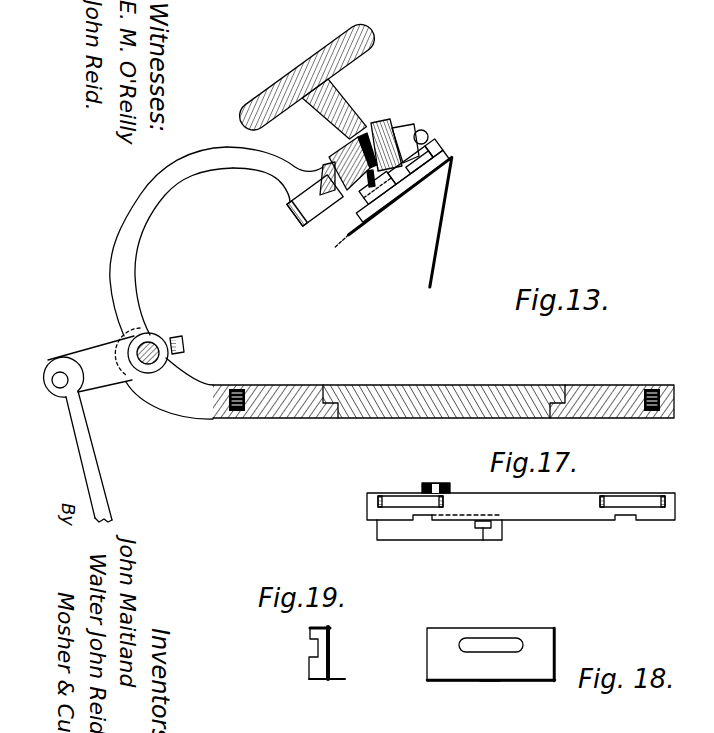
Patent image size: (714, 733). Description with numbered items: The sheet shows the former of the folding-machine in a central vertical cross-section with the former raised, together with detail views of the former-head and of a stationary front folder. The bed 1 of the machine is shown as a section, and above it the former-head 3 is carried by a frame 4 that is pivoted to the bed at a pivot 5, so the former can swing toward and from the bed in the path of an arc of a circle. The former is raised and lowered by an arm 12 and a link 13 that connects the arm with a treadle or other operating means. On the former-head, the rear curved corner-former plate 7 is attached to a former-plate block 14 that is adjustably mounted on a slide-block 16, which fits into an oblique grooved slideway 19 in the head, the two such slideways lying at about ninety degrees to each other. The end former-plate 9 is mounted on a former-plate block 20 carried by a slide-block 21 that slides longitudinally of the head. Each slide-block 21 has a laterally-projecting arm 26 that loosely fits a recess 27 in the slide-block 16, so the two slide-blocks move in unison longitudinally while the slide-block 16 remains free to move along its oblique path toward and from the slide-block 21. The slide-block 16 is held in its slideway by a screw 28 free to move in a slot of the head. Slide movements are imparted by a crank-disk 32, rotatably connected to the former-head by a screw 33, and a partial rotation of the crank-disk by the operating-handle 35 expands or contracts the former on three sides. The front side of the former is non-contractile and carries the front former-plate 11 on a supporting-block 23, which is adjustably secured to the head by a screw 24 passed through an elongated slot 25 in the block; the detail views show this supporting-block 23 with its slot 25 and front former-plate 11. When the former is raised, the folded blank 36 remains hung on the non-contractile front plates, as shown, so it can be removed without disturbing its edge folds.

In FIG. 13, the bed 1 is at (493, 385).
In FIG. 13, the former-head 3 is at (382, 128).
In FIG. 17, the former-head 3 is at (556, 521).
In FIG. 13, the frame 4 is at (172, 185).
In FIG. 13, the pivot 5 is at (143, 365).
In FIG. 13, the curved corner-former plate 7 is at (357, 232).
In FIG. 13, the end former-plate 9 is at (405, 200).
In FIG. 13, the front former-plate 11 is at (432, 168).
In FIG. 19, the front former-plate 11 is at (332, 682).
In FIG. 18, the front former-plate 11 is at (490, 682).
In FIG. 13, the arm 12 is at (89, 353).
In FIG. 13, the link 13 is at (99, 467).
In FIG. 13, the former-plate block 14 is at (381, 210).
In FIG. 13, the slide-block 16 is at (366, 194).
In FIG. 17, the slide-block 16 is at (430, 535).
In FIG. 17, the grooved slideway 19 is at (418, 514).
In FIG. 13, the former-plate block 20 is at (413, 186).
In FIG. 13, the slide-block 21 is at (405, 170).
In FIG. 13, the supporting-block 23 is at (403, 126).
In FIG. 19, the supporting-block 23 is at (333, 641).
In FIG. 18, the supporting-block 23 is at (548, 641).
In FIG. 13, the screw 24 is at (425, 131).
In FIG. 18, the elongated slot 25 is at (474, 643).
In FIG. 13, the laterally-projecting arm 26 is at (363, 196).
In FIG. 17, the laterally-projecting arm 26 is at (482, 521).
In FIG. 17, the recess 27 is at (486, 530).
In FIG. 17, the screw 28 is at (432, 483).
In FIG. 13, the crank-disk 32 is at (340, 160).
In FIG. 13, the screw 33 is at (364, 136).
In FIG. 13, the operating-handle 35 is at (290, 84).
In FIG. 13, the blank 36 is at (446, 222).